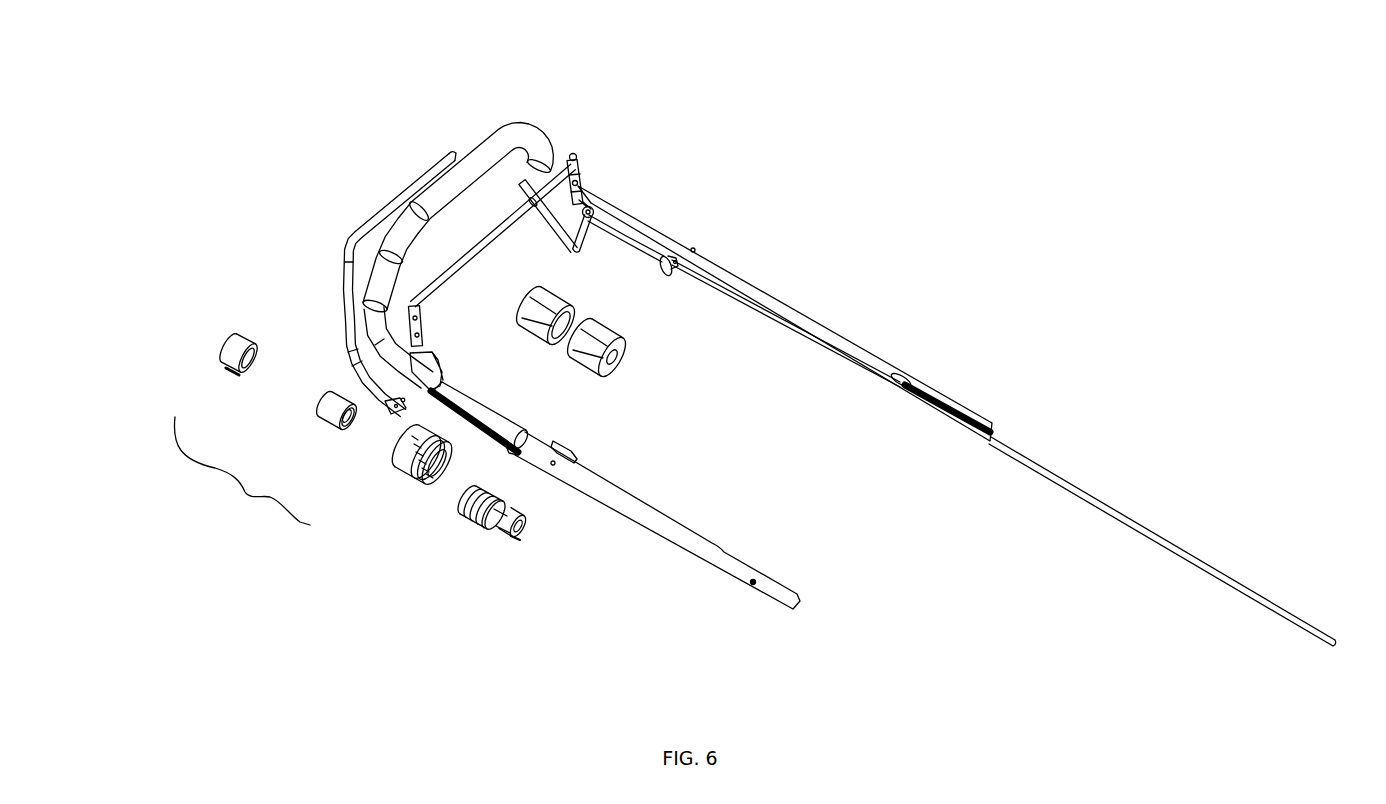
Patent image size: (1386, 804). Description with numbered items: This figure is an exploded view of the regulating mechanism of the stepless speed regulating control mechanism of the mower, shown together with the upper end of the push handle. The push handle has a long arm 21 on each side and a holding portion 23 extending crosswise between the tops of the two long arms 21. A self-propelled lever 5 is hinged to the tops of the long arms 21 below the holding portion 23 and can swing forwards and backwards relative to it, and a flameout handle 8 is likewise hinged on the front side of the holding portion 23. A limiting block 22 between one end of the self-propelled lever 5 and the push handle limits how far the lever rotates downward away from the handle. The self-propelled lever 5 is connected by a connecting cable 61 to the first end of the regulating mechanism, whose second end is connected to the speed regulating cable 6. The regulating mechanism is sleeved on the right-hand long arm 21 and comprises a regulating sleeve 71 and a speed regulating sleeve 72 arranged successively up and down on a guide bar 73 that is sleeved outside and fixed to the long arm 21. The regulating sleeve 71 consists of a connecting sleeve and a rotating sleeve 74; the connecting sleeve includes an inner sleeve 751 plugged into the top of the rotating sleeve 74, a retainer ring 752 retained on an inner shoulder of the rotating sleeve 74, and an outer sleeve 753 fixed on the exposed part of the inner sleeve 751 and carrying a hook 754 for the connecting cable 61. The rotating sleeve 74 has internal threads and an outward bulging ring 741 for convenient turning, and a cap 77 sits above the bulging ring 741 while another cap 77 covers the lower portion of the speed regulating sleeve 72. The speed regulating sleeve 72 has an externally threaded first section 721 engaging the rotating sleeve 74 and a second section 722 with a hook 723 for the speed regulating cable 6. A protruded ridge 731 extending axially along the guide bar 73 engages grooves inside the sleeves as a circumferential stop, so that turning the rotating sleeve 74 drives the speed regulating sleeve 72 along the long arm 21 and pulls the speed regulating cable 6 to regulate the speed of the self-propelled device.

The self-propelled lever 5 is at (402, 193).
The speed regulating cable 6 is at (518, 457).
The flameout handle 8 is at (573, 153).
The long arm 21 is at (805, 318).
The limiting block 22 is at (425, 355).
The holding portion 23 is at (473, 167).
The connecting cable 61 is at (399, 412).
The regulating sleeve 71 is at (248, 504).
The speed regulating sleeve 72 is at (522, 520).
The guide bar 73 is at (488, 417).
The rotating sleeve 74 is at (410, 478).
The cap 77 is at (588, 327).
The first section of speed regulating sleeve 721 is at (462, 513).
The second section of speed regulating sleeve 722 is at (488, 529).
The hook 723 is at (503, 538).
The protruded ridge 731 is at (457, 410).
The bulging ring 741 is at (413, 483).
The inner sleeve 751 is at (335, 397).
The retainer ring 752 is at (332, 428).
The outer sleeve 753 is at (233, 348).
The hook 754 is at (236, 376).